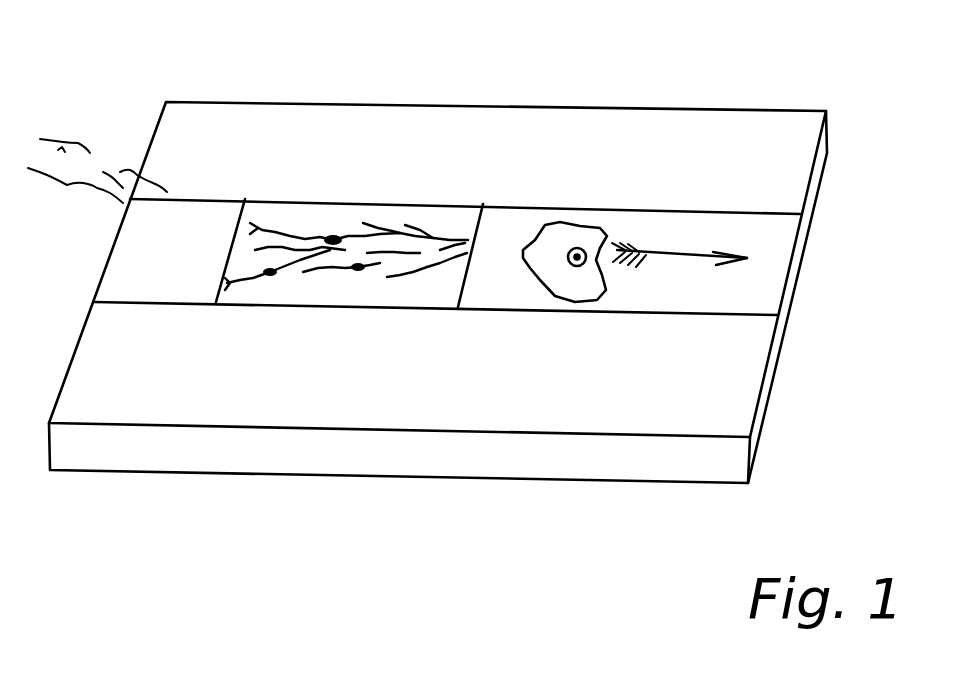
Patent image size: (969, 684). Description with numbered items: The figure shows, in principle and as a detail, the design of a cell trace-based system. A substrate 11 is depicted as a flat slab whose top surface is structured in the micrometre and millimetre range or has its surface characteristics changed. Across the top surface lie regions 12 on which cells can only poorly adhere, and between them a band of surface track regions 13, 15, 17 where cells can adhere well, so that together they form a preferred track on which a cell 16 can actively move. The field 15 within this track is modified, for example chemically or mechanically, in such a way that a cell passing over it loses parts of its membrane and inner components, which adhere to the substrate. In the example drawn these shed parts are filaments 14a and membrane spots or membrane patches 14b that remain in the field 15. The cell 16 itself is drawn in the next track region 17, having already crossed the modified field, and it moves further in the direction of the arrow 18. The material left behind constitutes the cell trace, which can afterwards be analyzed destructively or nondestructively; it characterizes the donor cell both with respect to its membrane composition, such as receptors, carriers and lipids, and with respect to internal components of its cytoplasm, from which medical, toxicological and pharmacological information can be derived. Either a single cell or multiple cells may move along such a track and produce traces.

The substrate 11 is at (438, 292).
The regions of poor cell adhesion 12 is at (447, 269).
The surface track region 13 is at (184, 250).
The filaments 14a is at (398, 228).
The membrane spots 14b is at (335, 237).
The field in the surface track region 15 is at (458, 254).
The cell 16 is at (597, 227).
The surface track region 17 is at (682, 236).
The arrow 18 is at (654, 274).